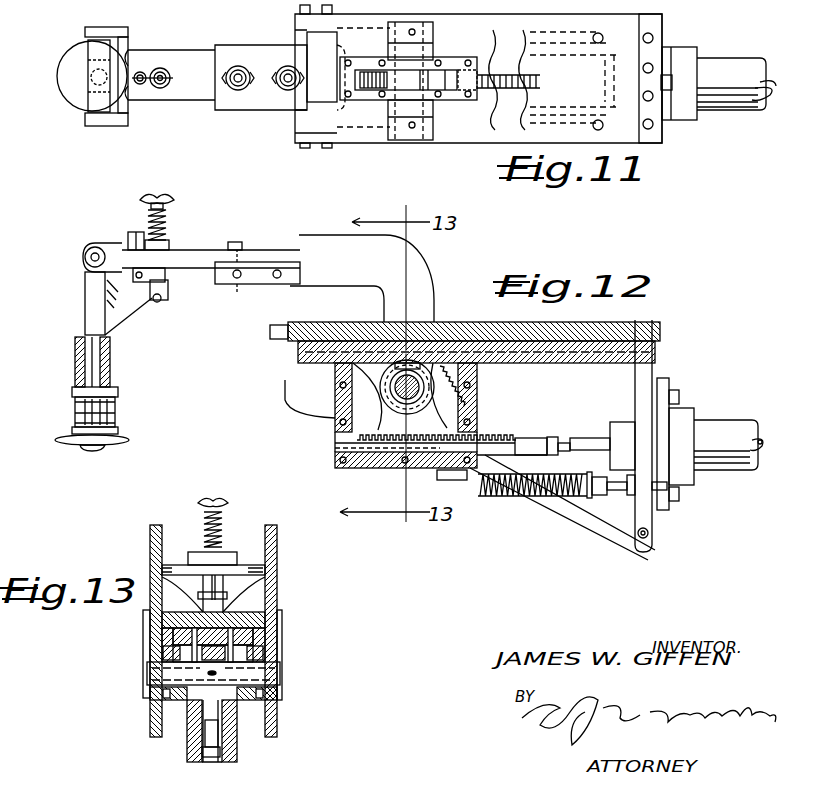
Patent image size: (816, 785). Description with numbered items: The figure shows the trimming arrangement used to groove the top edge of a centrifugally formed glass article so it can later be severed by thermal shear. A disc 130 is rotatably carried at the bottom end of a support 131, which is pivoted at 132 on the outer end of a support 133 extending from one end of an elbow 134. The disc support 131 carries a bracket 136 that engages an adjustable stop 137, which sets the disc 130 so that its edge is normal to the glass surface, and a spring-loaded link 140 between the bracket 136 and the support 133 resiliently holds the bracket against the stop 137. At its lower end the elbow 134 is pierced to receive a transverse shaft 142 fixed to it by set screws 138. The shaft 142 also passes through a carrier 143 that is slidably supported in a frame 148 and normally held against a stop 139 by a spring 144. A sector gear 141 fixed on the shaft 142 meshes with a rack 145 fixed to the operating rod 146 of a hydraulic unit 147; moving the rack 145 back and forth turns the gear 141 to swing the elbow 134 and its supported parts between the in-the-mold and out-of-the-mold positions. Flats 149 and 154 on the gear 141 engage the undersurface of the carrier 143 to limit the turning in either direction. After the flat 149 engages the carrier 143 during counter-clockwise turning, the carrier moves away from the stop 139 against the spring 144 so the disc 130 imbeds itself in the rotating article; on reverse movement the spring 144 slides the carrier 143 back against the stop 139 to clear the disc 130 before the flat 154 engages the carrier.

In FIG. 11, the disc 130 is at (78, 96).
In FIG. 12, the disc 130 is at (125, 432).
In FIG. 12, the support 131 is at (87, 300).
In FIG. 12, the pivot 132 is at (92, 256).
In FIG. 11, the support 133 is at (199, 43).
In FIG. 12, the support 133 is at (188, 258).
In FIG. 11, the elbow 134 is at (310, 18).
In FIG. 12, the elbow 134 is at (330, 243).
In FIG. 13, the elbow 134 is at (278, 549).
In FIG. 12, the bracket 136 is at (118, 312).
In FIG. 11, the stop 137 is at (138, 86).
In FIG. 12, the stop 137 is at (132, 238).
In FIG. 13, the set screws 138 is at (150, 694).
In FIG. 12, the stop 139 is at (290, 336).
In FIG. 11, the spring-loaded link 140 is at (162, 88).
In FIG. 12, the spring-loaded link 140 is at (147, 201).
In FIG. 13, the spring-loaded link 140 is at (204, 503).
In FIG. 11, the sector gear 141 is at (410, 84).
In FIG. 12, the sector gear 141 is at (445, 401).
In FIG. 13, the sector gear 141 is at (195, 722).
In FIG. 12, the transverse shaft 142 is at (350, 381).
In FIG. 13, the transverse shaft 142 is at (255, 674).
In FIG. 11, the carrier 143 is at (503, 66).
In FIG. 12, the carrier 143 is at (556, 363).
In FIG. 13, the carrier 143 is at (188, 640).
In FIG. 12, the spring 144 is at (497, 498).
In FIG. 11, the rack 145 is at (372, 84).
In FIG. 12, the rack 145 is at (516, 437).
In FIG. 13, the rack 145 is at (238, 740).
In FIG. 12, the operating rod 146 is at (588, 440).
In FIG. 11, the hydraulic unit 147 is at (716, 93).
In FIG. 12, the hydraulic unit 147 is at (742, 410).
In FIG. 11, the frame 148 is at (616, 125).
In FIG. 12, the frame 148 is at (482, 303).
In FIG. 13, the frame 148 is at (244, 608).
In FIG. 12, the flat 149 is at (477, 363).
In FIG. 12, the flat 154 is at (335, 417).